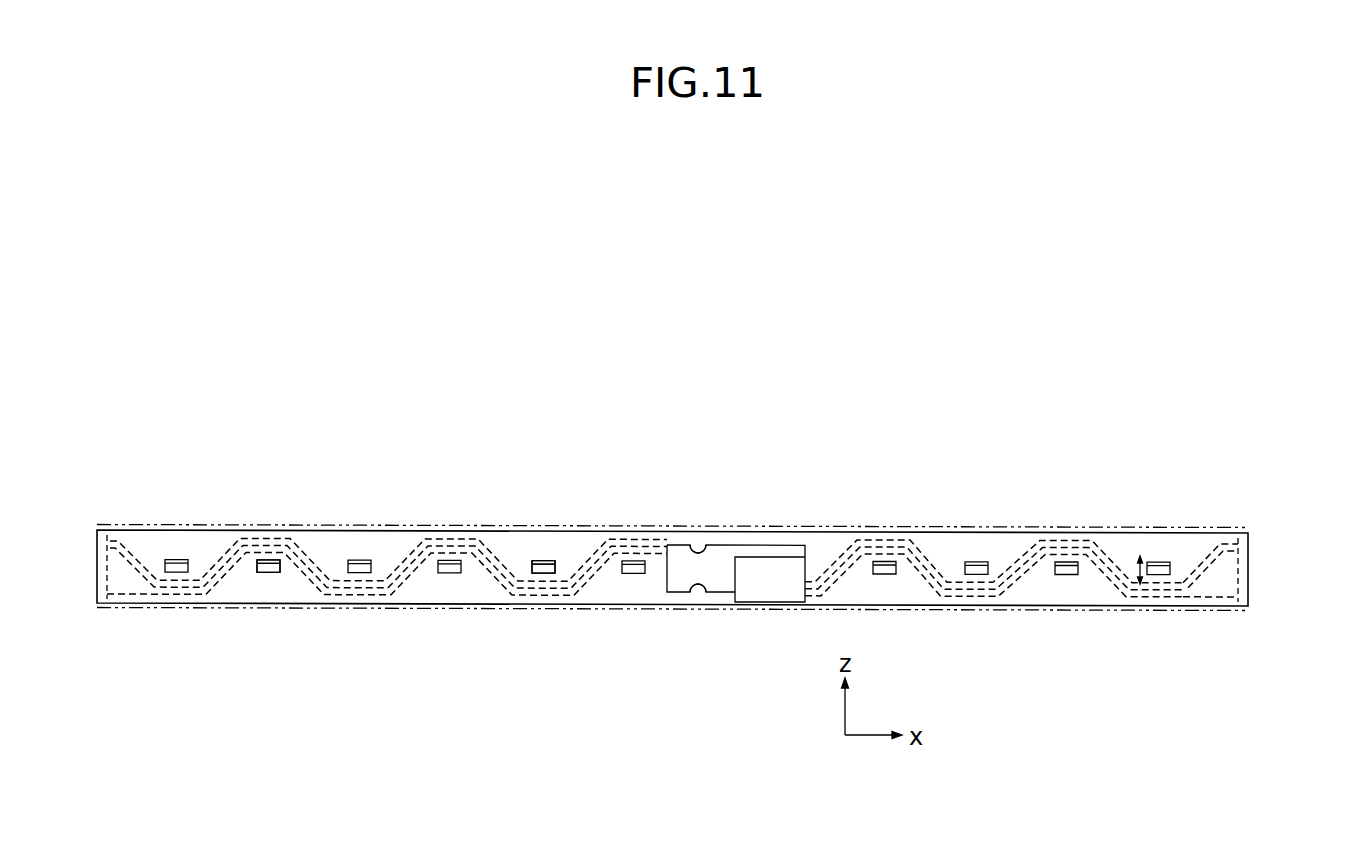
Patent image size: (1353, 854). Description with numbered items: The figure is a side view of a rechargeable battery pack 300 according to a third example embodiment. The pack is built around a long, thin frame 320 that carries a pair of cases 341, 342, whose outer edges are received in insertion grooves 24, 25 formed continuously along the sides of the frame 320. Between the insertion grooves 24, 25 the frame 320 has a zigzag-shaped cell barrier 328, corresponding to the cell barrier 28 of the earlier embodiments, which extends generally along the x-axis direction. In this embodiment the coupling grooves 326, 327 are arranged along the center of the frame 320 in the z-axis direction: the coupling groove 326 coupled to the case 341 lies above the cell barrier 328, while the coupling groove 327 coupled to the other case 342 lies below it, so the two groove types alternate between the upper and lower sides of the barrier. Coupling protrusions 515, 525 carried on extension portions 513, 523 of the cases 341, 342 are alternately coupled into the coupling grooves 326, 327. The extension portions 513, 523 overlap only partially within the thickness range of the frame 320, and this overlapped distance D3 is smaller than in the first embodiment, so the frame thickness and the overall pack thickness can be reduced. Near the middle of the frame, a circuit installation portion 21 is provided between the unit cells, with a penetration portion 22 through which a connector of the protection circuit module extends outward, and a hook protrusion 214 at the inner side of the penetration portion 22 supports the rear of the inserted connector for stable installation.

The rechargeable battery pack 300 is at (658, 396).
The frame 320 is at (1251, 569).
The case 341 is at (166, 524).
The case 342 is at (192, 609).
The cell barrier 28 is at (543, 594).
The cell barrier 328 is at (933, 564).
The insertion groove 24 is at (1201, 561).
The insertion groove 25 is at (1228, 596).
The overlapped distance D3 is at (1125, 558).
The hook protrusion 214 is at (768, 574).
The penetration portion 22 is at (705, 545).
The circuit installation portion 21 is at (709, 592).
The coupling groove 326 is at (535, 565).
The coupling groove 327 is at (447, 564).
The coupling protrusion 515 is at (545, 561).
The coupling protrusion 525 is at (271, 566).
The extension portion 513 is at (976, 569).
The extension portion 523 is at (1067, 560).